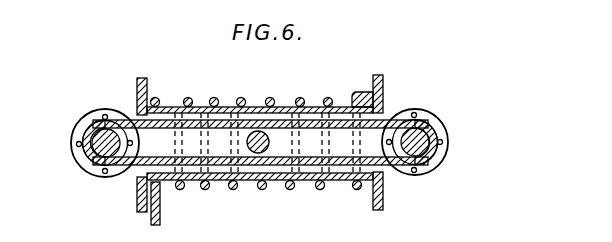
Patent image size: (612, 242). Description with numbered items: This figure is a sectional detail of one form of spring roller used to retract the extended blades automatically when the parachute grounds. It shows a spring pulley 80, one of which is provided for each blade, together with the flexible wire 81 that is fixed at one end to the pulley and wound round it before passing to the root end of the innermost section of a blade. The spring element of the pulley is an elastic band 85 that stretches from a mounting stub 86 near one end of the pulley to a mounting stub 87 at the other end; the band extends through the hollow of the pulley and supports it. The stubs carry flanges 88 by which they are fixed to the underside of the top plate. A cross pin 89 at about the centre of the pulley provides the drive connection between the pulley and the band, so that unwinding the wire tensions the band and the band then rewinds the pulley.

The spring pulley 80 is at (145, 82).
The flexible wire 81 is at (269, 98).
The elastic band 85 is at (135, 172).
The mounting stub 86 is at (92, 152).
The mounting stub 87 is at (418, 153).
The flange 88 is at (87, 122).
The cross pin 89 is at (257, 150).